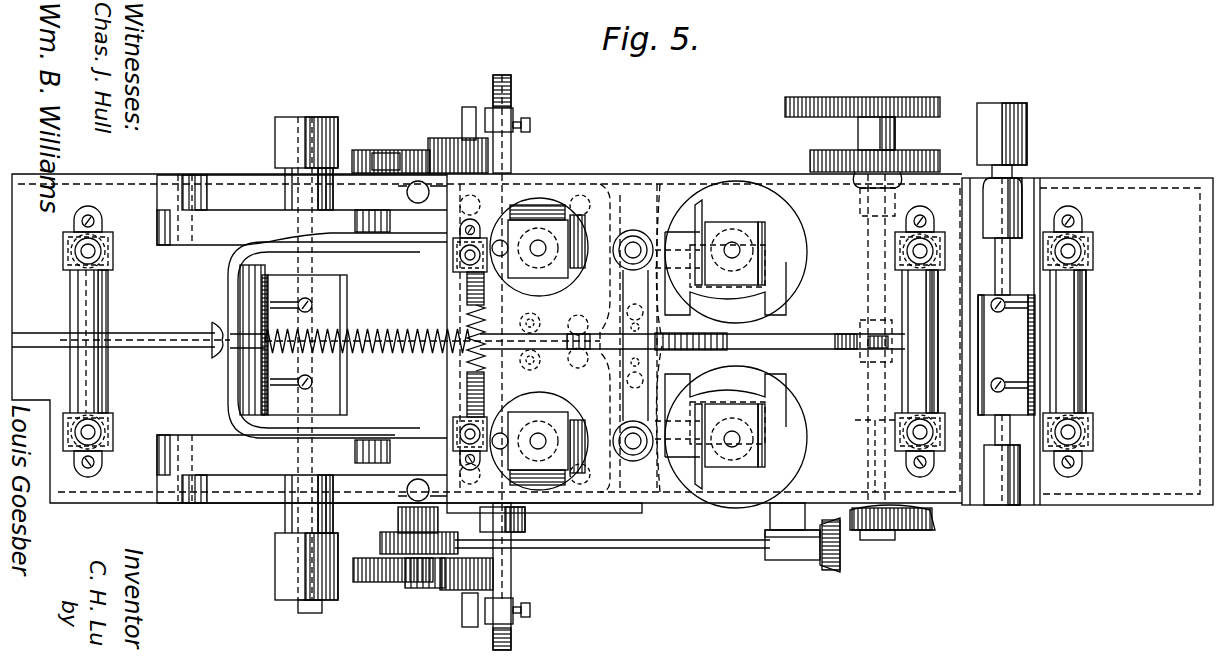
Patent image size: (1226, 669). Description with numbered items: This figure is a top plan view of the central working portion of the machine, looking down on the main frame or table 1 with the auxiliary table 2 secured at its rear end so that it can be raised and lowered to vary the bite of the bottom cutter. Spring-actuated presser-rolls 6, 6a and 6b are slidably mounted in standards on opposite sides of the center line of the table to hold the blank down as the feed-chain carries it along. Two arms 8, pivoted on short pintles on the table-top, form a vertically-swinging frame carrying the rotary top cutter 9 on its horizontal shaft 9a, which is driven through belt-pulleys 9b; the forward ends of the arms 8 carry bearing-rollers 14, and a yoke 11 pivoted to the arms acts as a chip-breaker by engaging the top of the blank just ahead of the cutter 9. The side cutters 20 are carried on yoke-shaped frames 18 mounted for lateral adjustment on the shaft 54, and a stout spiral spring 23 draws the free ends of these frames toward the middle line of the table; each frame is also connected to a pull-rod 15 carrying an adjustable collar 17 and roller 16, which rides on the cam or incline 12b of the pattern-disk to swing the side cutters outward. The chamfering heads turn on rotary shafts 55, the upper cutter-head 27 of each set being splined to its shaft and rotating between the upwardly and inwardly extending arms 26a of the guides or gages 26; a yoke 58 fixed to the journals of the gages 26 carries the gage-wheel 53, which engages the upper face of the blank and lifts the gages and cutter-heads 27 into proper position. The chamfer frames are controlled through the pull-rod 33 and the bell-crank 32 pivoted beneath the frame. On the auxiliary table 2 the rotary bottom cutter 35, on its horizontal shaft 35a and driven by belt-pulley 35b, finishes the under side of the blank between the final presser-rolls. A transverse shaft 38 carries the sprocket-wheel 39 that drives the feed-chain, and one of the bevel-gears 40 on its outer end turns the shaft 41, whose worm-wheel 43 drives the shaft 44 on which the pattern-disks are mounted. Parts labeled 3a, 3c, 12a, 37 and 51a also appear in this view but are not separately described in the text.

The main frame or table 1 is at (487, 343).
The auxiliary table 2 is at (1087, 341).
The guide rod 3a is at (150, 342).
The guide rod bearing 3c is at (1086, 364).
The presser-roll 6 is at (104, 292).
The presser-roll 6a is at (486, 312).
The presser-roll 6b is at (905, 372).
The arms 8 is at (302, 339).
The rotary top cutter 9 is at (335, 303).
The horizontal shaft 9a is at (310, 613).
The belt-pulleys 9b is at (338, 125).
The yoke 11 is at (245, 290).
The gear 12a is at (376, 150).
The cam or incline 12b is at (440, 145).
The bowls or bearing-rollers 14 is at (385, 173).
The pull-rod 15 is at (511, 164).
The bowl or roller 16 is at (468, 107).
The collar 17 is at (528, 128).
The yoke-shaped frame 18 is at (535, 338).
The side cutter-head 20 is at (548, 270).
The spiral spring 23 is at (485, 360).
The guides or gages 26 is at (778, 272).
The arms 26a is at (688, 305).
The upper cutter-head 27 is at (742, 230).
The bell-crank 32 is at (584, 293).
The pull-rod 33 is at (545, 368).
The rotary cutter 35 is at (1006, 355).
The horizontal shaft 35a is at (1012, 172).
The belt-pulley 35b is at (1027, 115).
The gear 37 is at (810, 160).
The transverse shaft 38 is at (870, 434).
The sprocket-wheel 39 is at (848, 350).
The bevel-gears 40 is at (900, 535).
The shaft 41 is at (665, 550).
The worm-wheel 43 is at (380, 543).
The driving-shaft 44 is at (398, 519).
The gear 51a is at (855, 105).
The gage-wheel 53 is at (735, 332).
The shaft 54 is at (633, 245).
The rotary shaft 55 is at (740, 248).
The yoke 58 is at (623, 316).